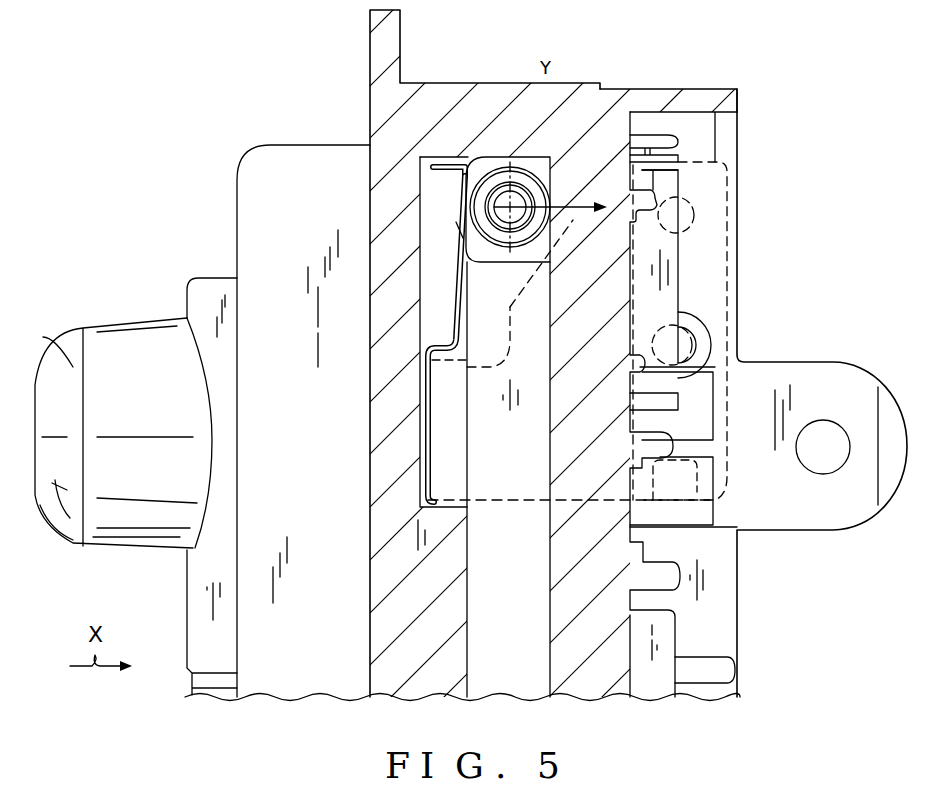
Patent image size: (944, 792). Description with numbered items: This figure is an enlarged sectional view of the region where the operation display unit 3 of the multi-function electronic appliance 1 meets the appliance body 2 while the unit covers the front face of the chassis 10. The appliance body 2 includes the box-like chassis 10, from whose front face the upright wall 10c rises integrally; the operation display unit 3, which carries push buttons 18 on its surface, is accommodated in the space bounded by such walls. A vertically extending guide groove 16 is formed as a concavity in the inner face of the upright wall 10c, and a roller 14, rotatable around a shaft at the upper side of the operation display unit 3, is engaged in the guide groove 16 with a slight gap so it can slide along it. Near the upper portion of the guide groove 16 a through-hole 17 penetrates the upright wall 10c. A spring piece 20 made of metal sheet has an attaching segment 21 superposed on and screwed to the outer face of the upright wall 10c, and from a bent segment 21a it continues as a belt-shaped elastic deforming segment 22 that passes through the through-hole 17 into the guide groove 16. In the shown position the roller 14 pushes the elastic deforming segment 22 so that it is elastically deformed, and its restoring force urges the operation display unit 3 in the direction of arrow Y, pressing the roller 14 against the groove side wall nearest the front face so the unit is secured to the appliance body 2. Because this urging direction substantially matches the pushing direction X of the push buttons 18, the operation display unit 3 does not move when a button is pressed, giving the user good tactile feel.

The multi-function electronic appliance 1 is at (742, 74).
The appliance body 2 is at (447, 176).
The operation display unit 3 is at (237, 162).
The chassis 10 is at (737, 103).
The upright wall 10c is at (602, 680).
The roller 14 is at (526, 150).
The guide groove 16 is at (467, 648).
The through-hole 17 is at (449, 171).
The push button 18 is at (190, 690).
The spring piece 20 is at (596, 172).
The attaching segment 21 is at (705, 298).
The bent segment 21a is at (427, 428).
The elastic deforming segment 22 is at (462, 230).